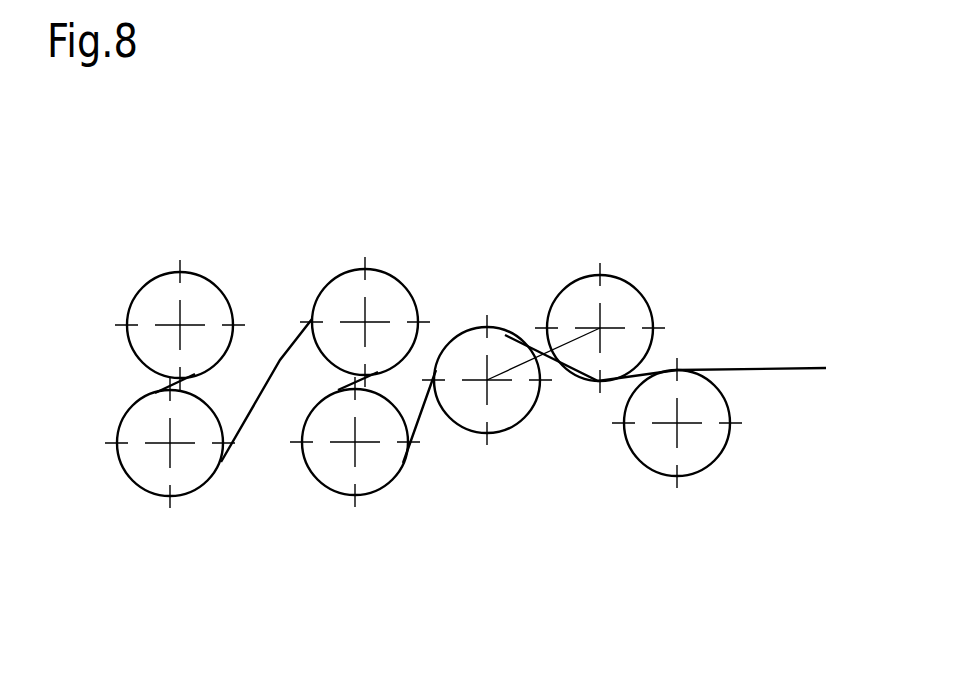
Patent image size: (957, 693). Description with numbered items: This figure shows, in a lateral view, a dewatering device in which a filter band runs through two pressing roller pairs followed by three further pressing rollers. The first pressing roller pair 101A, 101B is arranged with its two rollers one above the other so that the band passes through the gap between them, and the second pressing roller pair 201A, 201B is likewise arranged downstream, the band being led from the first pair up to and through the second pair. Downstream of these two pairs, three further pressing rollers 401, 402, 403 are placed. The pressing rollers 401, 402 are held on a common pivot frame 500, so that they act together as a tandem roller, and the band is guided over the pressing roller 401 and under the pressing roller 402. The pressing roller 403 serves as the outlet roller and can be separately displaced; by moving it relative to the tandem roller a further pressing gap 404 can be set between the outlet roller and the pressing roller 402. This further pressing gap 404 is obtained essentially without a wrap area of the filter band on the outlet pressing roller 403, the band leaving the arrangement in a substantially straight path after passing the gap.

The pressing roller of first pressing roller pair 101A is at (145, 299).
The pressing roller of first pressing roller pair 101B is at (148, 476).
The pressing roller of second pressing roller pair 201A is at (330, 297).
The pressing roller of second pressing roller pair 201B is at (330, 472).
The pressing roller 401 is at (478, 335).
The pressing roller 402 is at (628, 297).
The outlet pressing roller 403 is at (688, 470).
The further pressing gap 404 is at (643, 370).
The common pivot frame 500 is at (546, 366).